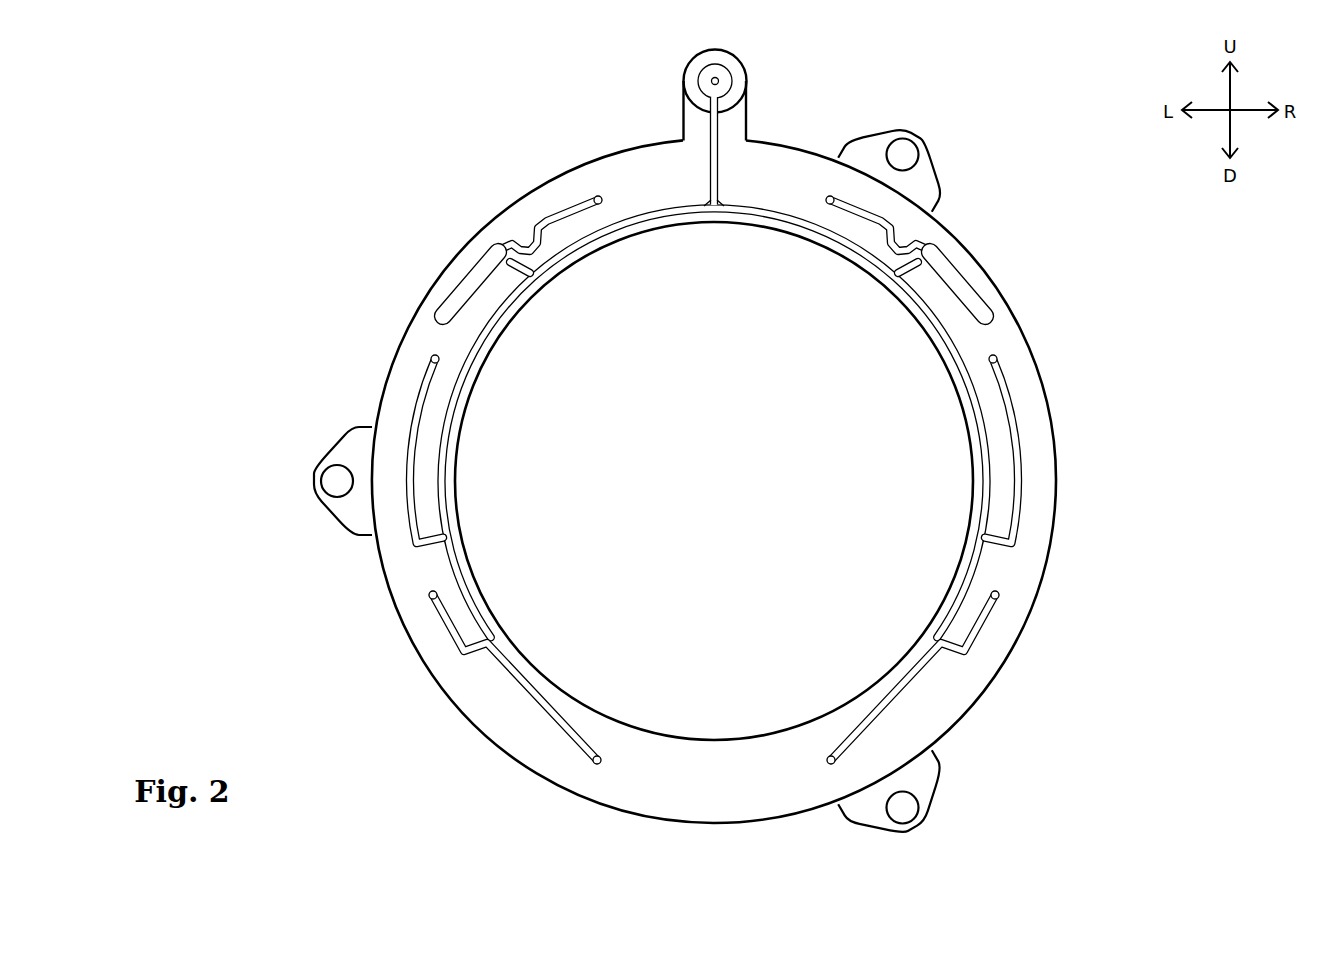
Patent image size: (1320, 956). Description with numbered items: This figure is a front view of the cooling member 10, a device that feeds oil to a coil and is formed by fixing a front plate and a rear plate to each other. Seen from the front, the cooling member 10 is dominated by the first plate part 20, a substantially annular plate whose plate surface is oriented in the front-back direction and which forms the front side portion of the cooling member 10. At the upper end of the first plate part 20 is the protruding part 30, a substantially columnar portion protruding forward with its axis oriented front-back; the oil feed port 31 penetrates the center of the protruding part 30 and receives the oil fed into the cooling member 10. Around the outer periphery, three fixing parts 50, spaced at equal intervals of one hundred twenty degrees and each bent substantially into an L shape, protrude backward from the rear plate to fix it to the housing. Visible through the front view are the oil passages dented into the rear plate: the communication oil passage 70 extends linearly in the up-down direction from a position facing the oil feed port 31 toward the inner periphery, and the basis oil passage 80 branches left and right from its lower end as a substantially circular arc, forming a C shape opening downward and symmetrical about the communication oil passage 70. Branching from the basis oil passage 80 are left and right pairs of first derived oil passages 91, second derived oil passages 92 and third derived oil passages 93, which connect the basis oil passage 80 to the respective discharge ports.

The cooling member 10 is at (274, 142).
The first plate part 20 is at (610, 162).
The protruding part 30 is at (748, 77).
The oil feed port 31 is at (707, 79).
The fixing parts 50 is at (930, 164).
The communication oil passage 70 is at (718, 168).
The basis oil passage 80 is at (764, 220).
The first derived oil passages 91 is at (448, 290).
The second derived oil passages 92 is at (418, 399).
The third derived oil passages 93 is at (436, 622).